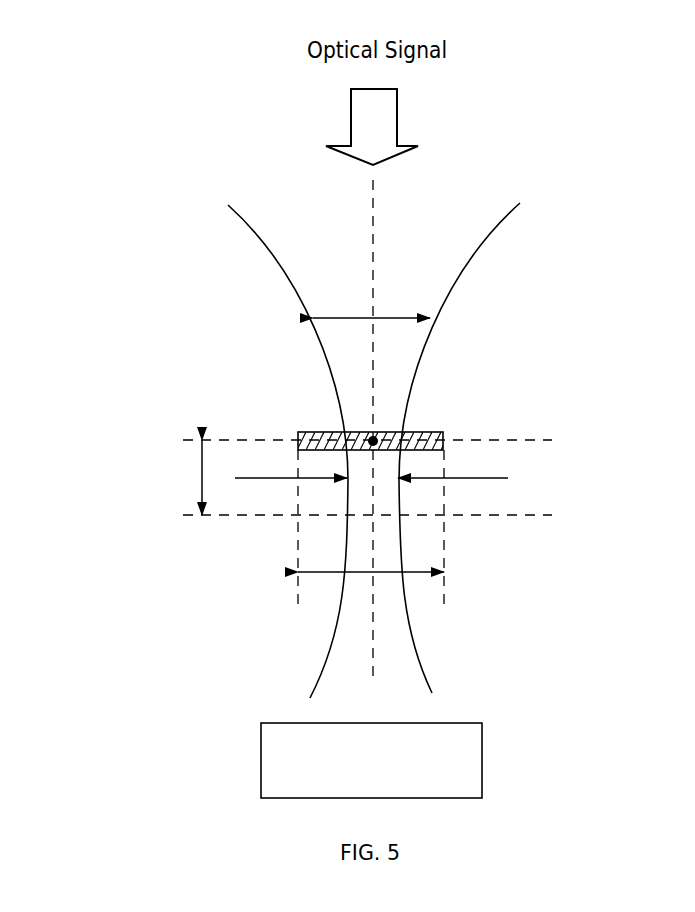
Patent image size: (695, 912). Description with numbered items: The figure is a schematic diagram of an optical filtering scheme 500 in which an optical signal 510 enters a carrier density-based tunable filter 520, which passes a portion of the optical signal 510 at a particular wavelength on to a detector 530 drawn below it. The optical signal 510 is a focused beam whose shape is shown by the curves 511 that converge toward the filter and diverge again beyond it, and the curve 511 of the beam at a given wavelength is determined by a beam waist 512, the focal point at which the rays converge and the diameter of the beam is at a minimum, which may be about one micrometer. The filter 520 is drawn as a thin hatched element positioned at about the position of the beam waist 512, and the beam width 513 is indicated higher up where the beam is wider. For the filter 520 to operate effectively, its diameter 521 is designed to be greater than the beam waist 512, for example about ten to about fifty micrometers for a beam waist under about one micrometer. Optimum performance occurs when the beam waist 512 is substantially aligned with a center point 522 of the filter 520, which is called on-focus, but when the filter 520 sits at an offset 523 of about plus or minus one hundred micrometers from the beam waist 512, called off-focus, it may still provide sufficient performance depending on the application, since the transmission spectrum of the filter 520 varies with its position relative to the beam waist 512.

The optical filtering scheme 500 is at (72, 56).
The optical signal 510 is at (350, 120).
The curves 511 is at (273, 248).
The beam waist 512 is at (393, 477).
The beam width 513 is at (383, 318).
The carrier density-based tunable filter 520 is at (298, 434).
The diameter 521 is at (408, 575).
The center point 522 is at (377, 437).
The offset 523 is at (200, 477).
The detector 530 is at (261, 765).